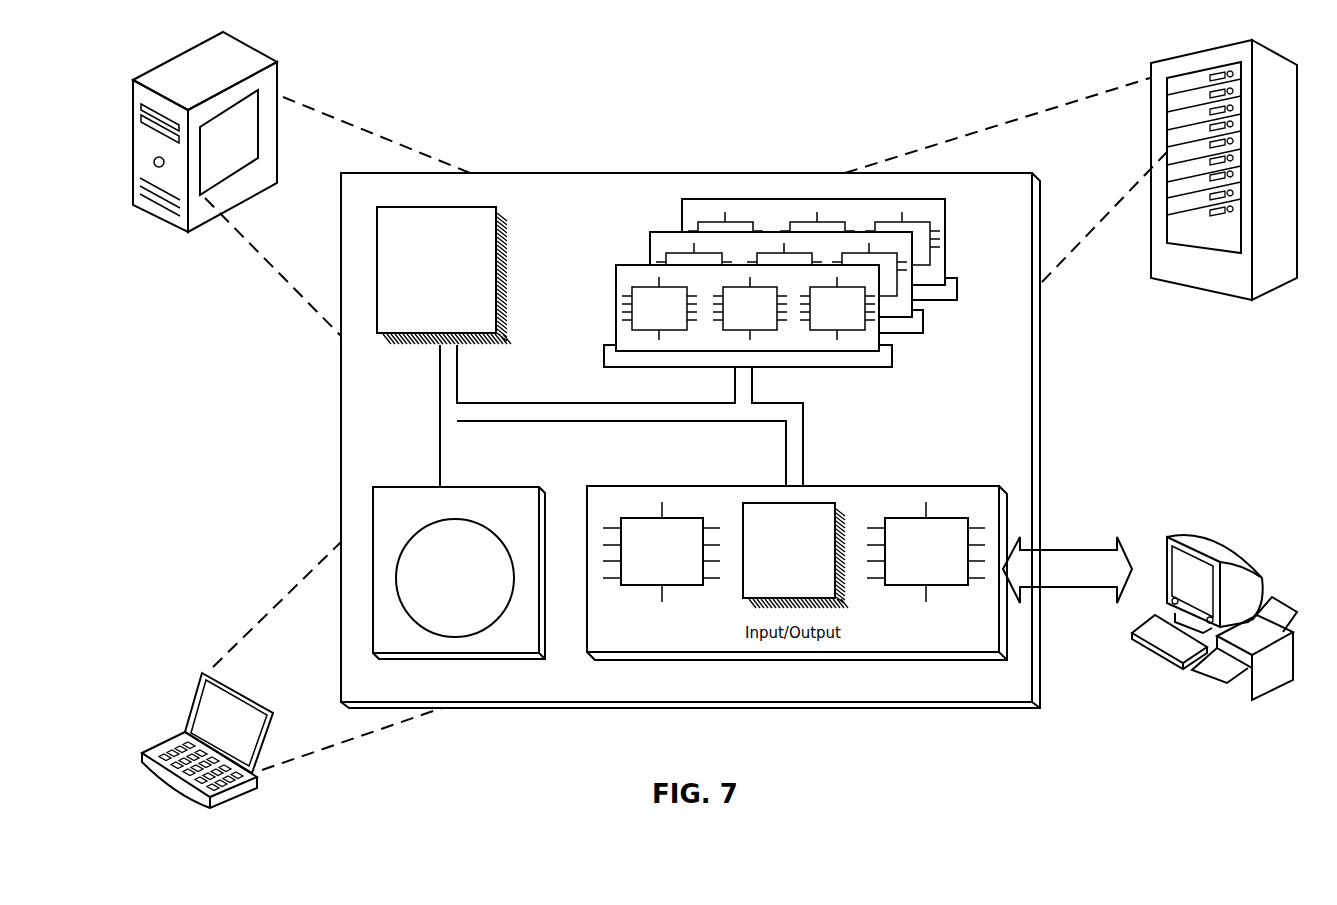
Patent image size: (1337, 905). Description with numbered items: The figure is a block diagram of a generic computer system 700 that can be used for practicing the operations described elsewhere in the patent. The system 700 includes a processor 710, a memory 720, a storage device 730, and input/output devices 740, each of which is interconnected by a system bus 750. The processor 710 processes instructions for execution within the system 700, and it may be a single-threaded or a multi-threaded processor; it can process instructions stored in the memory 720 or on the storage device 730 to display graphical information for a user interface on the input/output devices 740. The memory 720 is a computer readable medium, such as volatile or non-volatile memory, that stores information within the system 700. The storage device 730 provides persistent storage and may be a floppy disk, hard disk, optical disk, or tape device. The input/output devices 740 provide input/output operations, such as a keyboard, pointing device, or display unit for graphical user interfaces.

The generic computer system 700 is at (516, 80).
The processor 710 is at (491, 325).
The memory 720 is at (956, 335).
The storage device 730 is at (533, 643).
The input/output devices 740 is at (1165, 544).
The system bus 750 is at (620, 422).